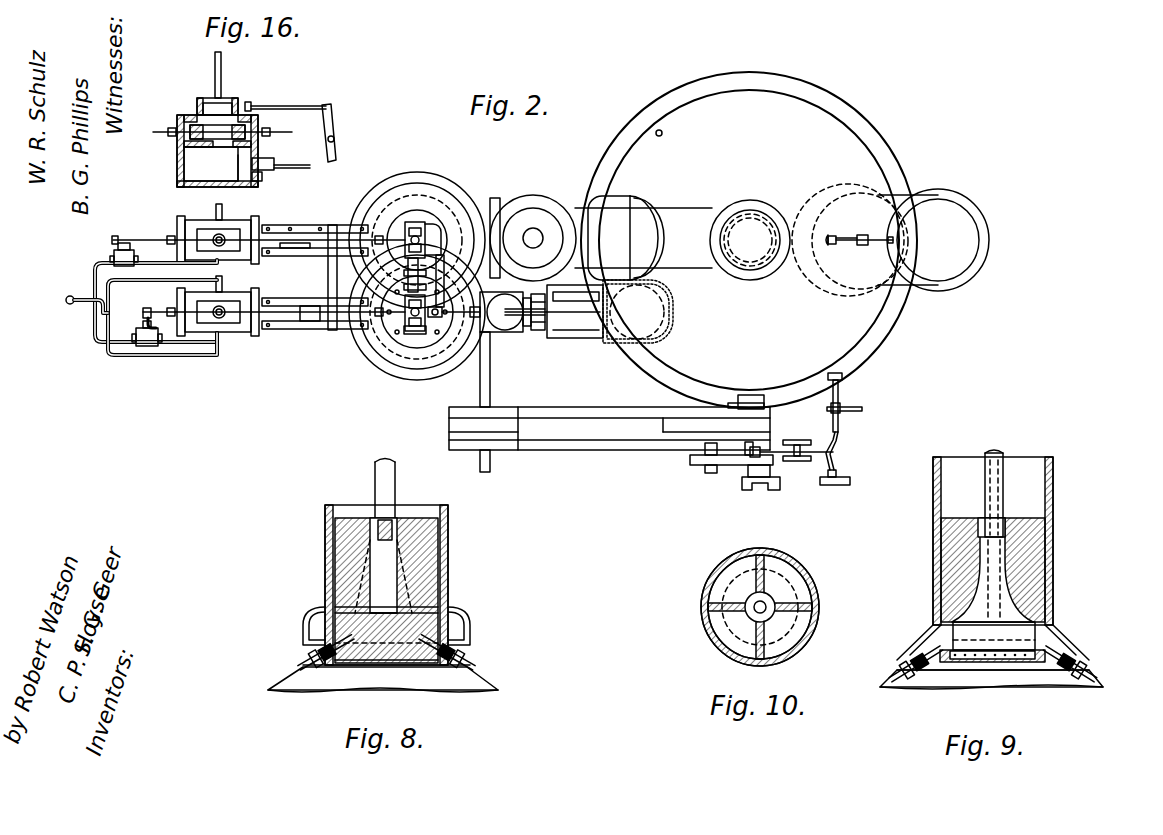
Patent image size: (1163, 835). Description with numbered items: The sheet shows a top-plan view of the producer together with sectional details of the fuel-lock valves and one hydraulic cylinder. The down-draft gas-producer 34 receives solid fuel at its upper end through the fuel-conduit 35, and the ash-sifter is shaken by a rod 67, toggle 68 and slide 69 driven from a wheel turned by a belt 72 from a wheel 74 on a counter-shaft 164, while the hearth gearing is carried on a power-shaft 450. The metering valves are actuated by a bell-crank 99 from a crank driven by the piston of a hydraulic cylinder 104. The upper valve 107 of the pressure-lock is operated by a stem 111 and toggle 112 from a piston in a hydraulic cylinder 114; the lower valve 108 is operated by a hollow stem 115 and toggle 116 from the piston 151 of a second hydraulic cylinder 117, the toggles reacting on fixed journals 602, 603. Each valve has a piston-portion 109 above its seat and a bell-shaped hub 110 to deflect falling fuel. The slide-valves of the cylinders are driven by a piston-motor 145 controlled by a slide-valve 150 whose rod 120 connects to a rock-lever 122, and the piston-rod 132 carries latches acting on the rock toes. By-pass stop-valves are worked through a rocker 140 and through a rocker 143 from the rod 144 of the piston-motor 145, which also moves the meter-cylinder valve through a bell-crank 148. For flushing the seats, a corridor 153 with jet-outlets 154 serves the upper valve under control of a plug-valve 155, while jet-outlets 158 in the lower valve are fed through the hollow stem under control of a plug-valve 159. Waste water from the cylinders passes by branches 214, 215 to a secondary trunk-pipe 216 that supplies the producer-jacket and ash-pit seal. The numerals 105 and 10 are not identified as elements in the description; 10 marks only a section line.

In FIG. 2, the down-draft gas-producer 34 is at (830, 121).
In FIG. 2, the fuel-conduit 35 is at (678, 218).
In FIG. 10, the fuel-conduit 35 is at (818, 587).
In FIG. 2, the bell-crank 99 is at (568, 294).
In FIG. 2, the hydraulic cylinder 104 is at (532, 328).
In FIG. 2, the collar 105 is at (538, 334).
In FIG. 2, the stem 111 is at (511, 322).
In FIG. 8, the stem 111 is at (378, 475).
In FIG. 2, the toggle 112 is at (403, 320).
In FIG. 2, the hydraulic cylinder 114 is at (238, 333).
In FIG. 2, the stem 115 is at (420, 241).
In FIG. 9, the stem 115 is at (1003, 478).
In FIG. 2, the toggle 116 is at (407, 225).
In FIG. 16, the hydraulic cylinder 117 is at (200, 165).
In FIG. 2, the hydraulic cylinder 117 is at (232, 228).
In FIG. 2, the rocker 140 is at (322, 330).
In FIG. 2, the rocker 143 is at (290, 257).
In FIG. 2, the bell-crank 148 is at (442, 255).
In FIG. 2, the plug-valve 155 is at (143, 343).
In FIG. 2, the plug-valve 159 is at (116, 252).
In FIG. 2, the counter-shaft 164 is at (480, 390).
In FIG. 2, the branch 214 is at (95, 334).
In FIG. 2, the branch 215 is at (95, 265).
In FIG. 2, the secondary trunk-pipe 216 is at (66, 300).
In FIG. 2, the power-shaft 450 is at (700, 466).
In FIG. 2, the fixed journal 602 is at (412, 333).
In FIG. 2, the fixed journal 603 is at (419, 229).
In FIG. 2, the rod 67 is at (840, 393).
In FIG. 2, the toggle 68 is at (838, 442).
In FIG. 2, the slide 69 is at (797, 441).
In FIG. 2, the belt 72 is at (748, 458).
In FIG. 2, the wheel 74 is at (730, 456).
In FIG. 16, the rod 120 is at (275, 105).
In FIG. 16, the rock-lever 122 is at (334, 117).
In FIG. 16, the piston-rod 132 is at (307, 149).
In FIG. 16, the rod 144 is at (288, 131).
In FIG. 16, the piston-motor 145 is at (191, 116).
In FIG. 16, the slide-valve 150 is at (215, 108).
In FIG. 16, the piston 151 is at (258, 175).
In FIG. 8, the upper valve 107 is at (352, 660).
In FIG. 8, the piston-portion 109 is at (455, 624).
In FIG. 9, the piston-portion 109 is at (1040, 630).
In FIG. 8, the bell-shaped hub 110 is at (415, 585).
In FIG. 9, the bell-shaped hub 110 is at (1020, 592).
In FIG. 8, the corridor 153 is at (318, 627).
In FIG. 8, the jet-outlets 154 is at (440, 655).
In FIG. 10, the lower valve 108 is at (718, 593).
In FIG. 9, the lower valve 108 is at (960, 662).
In FIG. 9, the wall 10 is at (985, 567).
In FIG. 9, the jet-outlets 158 is at (1015, 662).